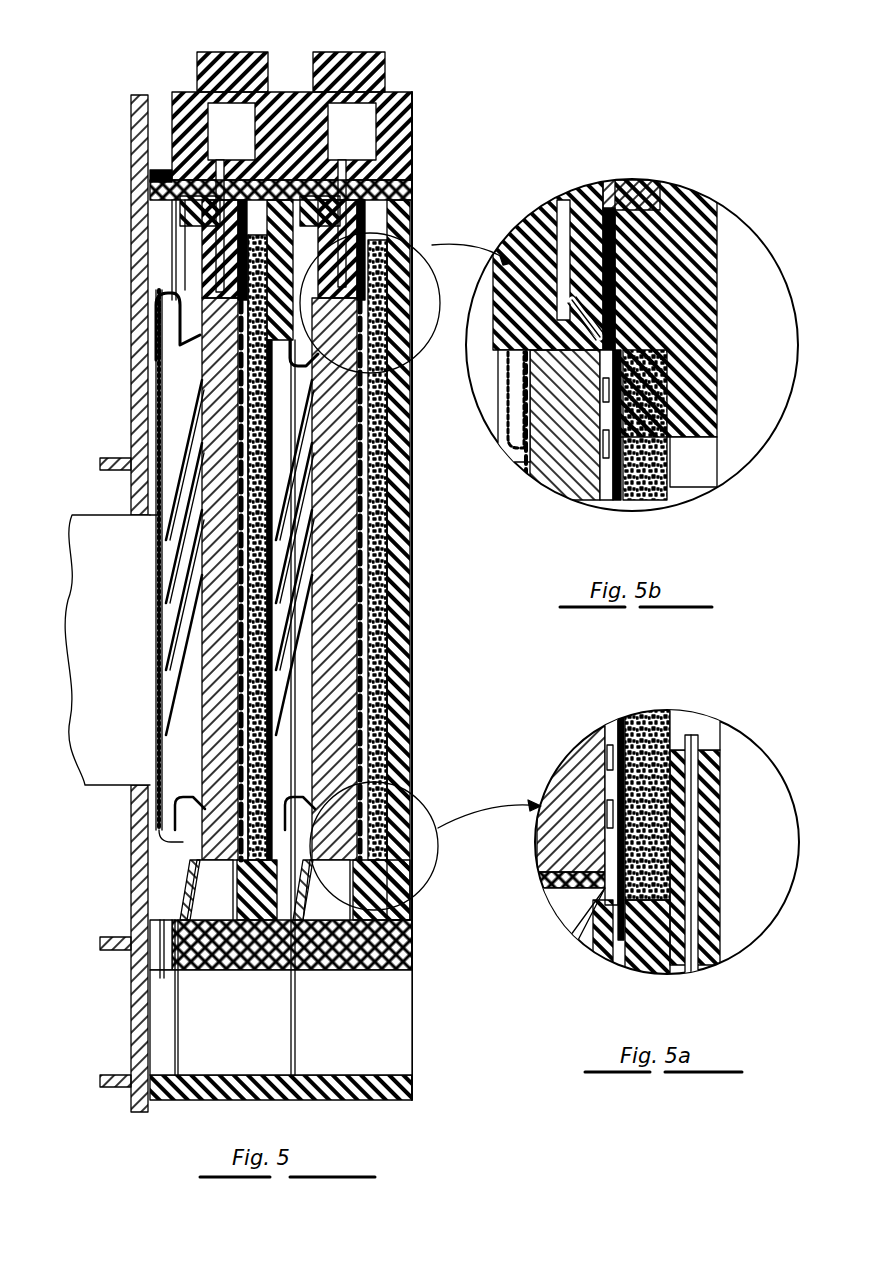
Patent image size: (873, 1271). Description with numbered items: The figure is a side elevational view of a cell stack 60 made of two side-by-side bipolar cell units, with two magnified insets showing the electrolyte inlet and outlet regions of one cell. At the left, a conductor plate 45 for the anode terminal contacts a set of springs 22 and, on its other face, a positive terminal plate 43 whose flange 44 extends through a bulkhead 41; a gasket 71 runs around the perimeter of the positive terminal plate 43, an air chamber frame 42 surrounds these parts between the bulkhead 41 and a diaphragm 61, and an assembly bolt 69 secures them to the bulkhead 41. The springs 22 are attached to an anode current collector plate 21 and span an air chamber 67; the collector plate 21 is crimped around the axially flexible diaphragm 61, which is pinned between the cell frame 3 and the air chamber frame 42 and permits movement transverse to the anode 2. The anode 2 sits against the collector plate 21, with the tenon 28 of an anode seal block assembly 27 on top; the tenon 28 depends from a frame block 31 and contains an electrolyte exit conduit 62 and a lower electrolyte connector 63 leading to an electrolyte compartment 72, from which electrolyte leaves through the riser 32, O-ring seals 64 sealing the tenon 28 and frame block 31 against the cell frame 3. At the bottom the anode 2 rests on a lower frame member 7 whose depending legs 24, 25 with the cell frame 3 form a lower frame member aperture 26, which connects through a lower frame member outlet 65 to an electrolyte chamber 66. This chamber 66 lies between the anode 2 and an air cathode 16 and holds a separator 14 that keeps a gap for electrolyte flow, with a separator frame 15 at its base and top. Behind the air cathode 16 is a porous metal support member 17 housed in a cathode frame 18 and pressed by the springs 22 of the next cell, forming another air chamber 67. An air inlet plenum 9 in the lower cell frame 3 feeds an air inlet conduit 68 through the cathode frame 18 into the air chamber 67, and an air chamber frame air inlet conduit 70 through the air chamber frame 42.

In FIG. 5, the anode 2 is at (213, 347).
In FIG. 5B, the anode 2 is at (565, 475).
In FIG. 5A, the anode 2 is at (568, 800).
In FIG. 5, the cell frame 3 is at (412, 192).
In FIG. 5B, the cell frame 3 is at (648, 178).
In FIG. 5, the lower frame member 7 is at (192, 863).
In FIG. 5, the air inlet plenum 9 is at (362, 1025).
In FIG. 5B, the separator 14 is at (605, 390).
In FIG. 5A, the separator 14 is at (606, 753).
In FIG. 5B, the separator frame 15 is at (612, 260).
In FIG. 5A, the separator frame 15 is at (612, 973).
In FIG. 5, the air cathode 16 is at (378, 630).
In FIG. 5B, the air cathode 16 is at (618, 497).
In FIG. 5A, the air cathode 16 is at (620, 712).
In FIG. 5, the porous metal support member 17 is at (382, 665).
In FIG. 5B, the porous metal support member 17 is at (653, 490).
In FIG. 5A, the porous metal support member 17 is at (650, 710).
In FIG. 5, the cathode frame 18 is at (398, 345).
In FIG. 5B, the cathode frame 18 is at (700, 180).
In FIG. 5A, the cathode frame 18 is at (720, 915).
In FIG. 5, the anode current collector plate 21 is at (236, 705).
In FIG. 5B, the anode current collector plate 21 is at (526, 485).
In FIG. 5, the springs 22 is at (190, 462).
In FIG. 5, the depending frame leg 24 is at (188, 878).
In FIG. 5, the depending frame leg 25 is at (215, 905).
In FIG. 5A, the depending frame leg 25 is at (597, 955).
In FIG. 5, the lower frame member aperture 26 is at (242, 973).
In FIG. 5A, the lower frame member aperture 26 is at (568, 906).
In FIG. 5, the anode seal block assembly 27 is at (172, 90).
In FIG. 5, the tenon 28 is at (200, 243).
In FIG. 5B, the tenon 28 is at (535, 252).
In FIG. 5, the frame block 31 is at (412, 120).
In FIG. 5, the riser 32 is at (353, 53).
In FIG. 5, the bulkhead 41 is at (131, 1044).
In FIG. 5, the air chamber frame 42 is at (150, 207).
In FIG. 5, the positive terminal plate 43 is at (155, 522).
In FIG. 5, the flange 44 is at (128, 637).
In FIG. 5, the conductor plate 45 is at (157, 570).
In FIG. 5, the cell stack 60 is at (455, 176).
In FIG. 5, the axially flexible diaphragm 61 is at (195, 268).
In FIG. 5B, the axially flexible diaphragm 61 is at (507, 447).
In FIG. 5, the electrolyte exit conduit 62 is at (225, 160).
In FIG. 5B, the electrolyte exit conduit 62 is at (562, 212).
In FIG. 5, the lower electrolyte connector 63 is at (197, 311).
In FIG. 5B, the lower electrolyte connector 63 is at (625, 345).
In FIG. 5, the O-ring seals 64 is at (198, 179).
In FIG. 5A, the lower frame member outlet 65 is at (597, 890).
In FIG. 5B, the electrolyte chamber 66 is at (607, 473).
In FIG. 5A, the electrolyte chamber 66 is at (612, 727).
In FIG. 5, the air chamber 67 is at (178, 772).
In FIG. 5B, the air chamber 67 is at (689, 479).
In FIG. 5A, the air chamber 67 is at (699, 724).
In FIG. 5, the air inlet conduit 68 is at (402, 972).
In FIG. 5A, the air inlet conduit 68 is at (692, 975).
In FIG. 5, the assembly bolt 69 is at (165, 330).
In FIG. 5, the air chamber frame air inlet conduit 70 is at (160, 975).
In FIG. 5, the gasket 71 is at (160, 790).
In FIG. 5, the electrolyte compartment 72 is at (350, 118).